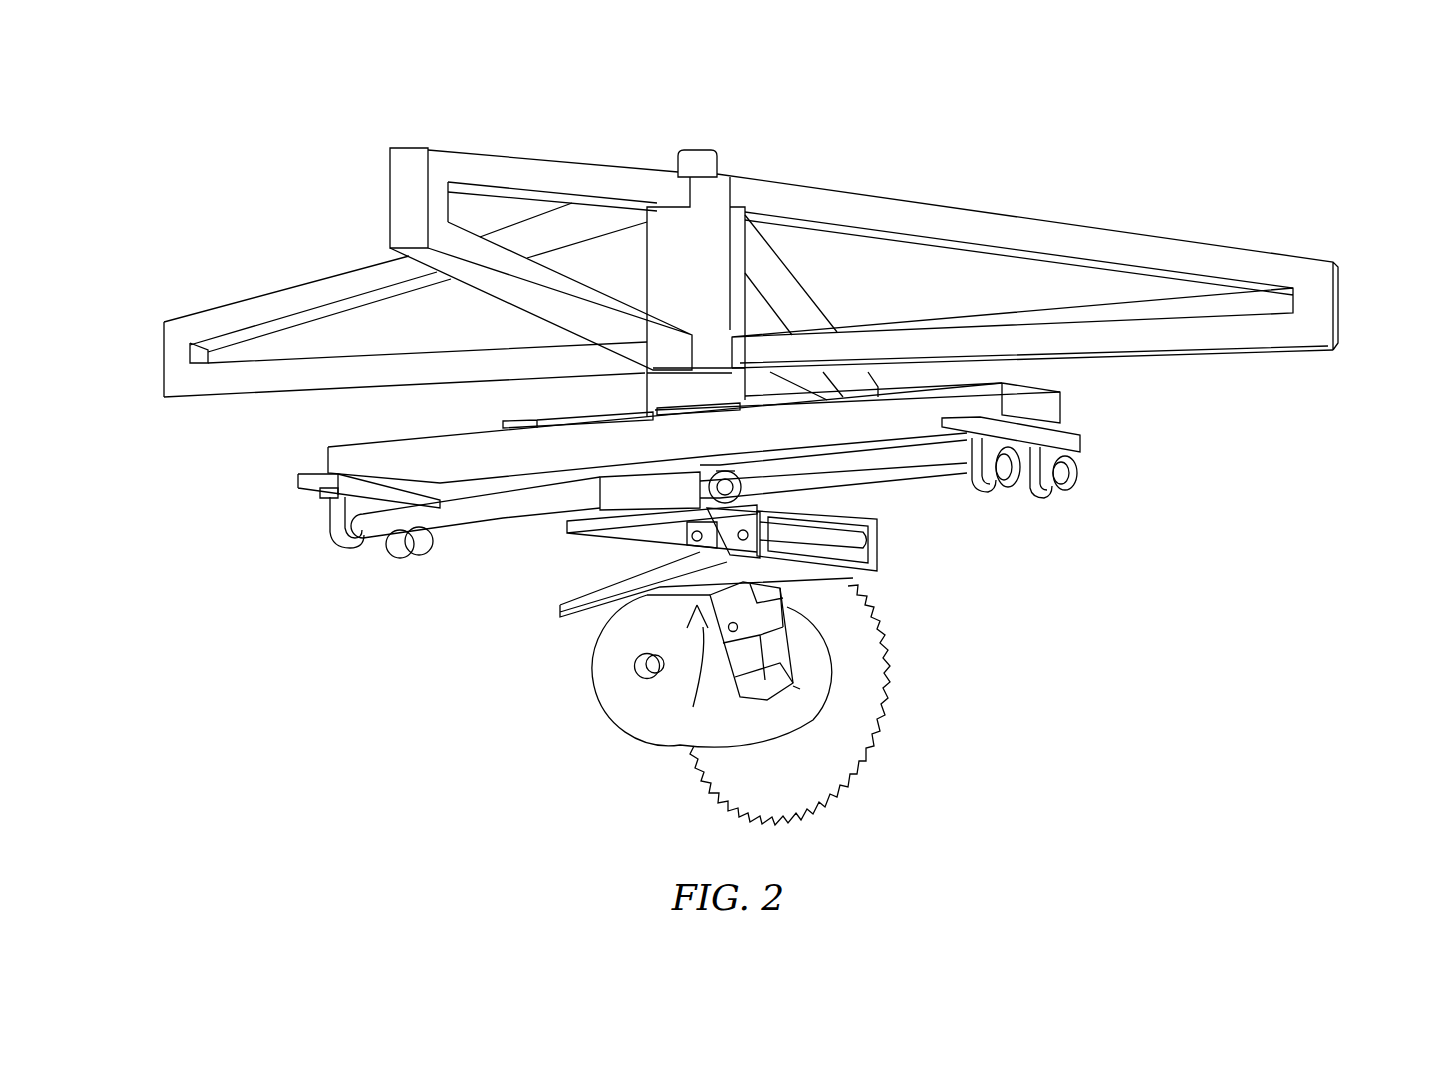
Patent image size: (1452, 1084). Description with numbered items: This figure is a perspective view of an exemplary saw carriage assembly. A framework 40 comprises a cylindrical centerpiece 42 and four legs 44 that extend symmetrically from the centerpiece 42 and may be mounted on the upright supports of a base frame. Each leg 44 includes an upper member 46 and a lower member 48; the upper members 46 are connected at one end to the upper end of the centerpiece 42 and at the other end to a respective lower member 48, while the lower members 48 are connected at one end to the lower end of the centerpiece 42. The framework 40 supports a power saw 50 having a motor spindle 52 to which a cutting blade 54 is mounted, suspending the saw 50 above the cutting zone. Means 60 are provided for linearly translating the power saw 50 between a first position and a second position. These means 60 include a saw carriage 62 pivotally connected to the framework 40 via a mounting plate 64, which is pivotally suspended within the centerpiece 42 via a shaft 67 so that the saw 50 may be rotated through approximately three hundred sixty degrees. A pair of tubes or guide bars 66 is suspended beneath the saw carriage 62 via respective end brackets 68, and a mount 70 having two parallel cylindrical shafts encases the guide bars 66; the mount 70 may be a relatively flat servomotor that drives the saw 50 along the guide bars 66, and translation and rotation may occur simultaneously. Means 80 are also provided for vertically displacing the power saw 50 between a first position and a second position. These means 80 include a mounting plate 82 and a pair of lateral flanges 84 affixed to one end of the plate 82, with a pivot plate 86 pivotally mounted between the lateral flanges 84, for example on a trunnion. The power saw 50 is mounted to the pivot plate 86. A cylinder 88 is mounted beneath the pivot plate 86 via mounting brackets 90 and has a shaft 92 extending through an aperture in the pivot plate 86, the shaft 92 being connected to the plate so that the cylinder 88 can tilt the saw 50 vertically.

The framework 40 is at (832, 178).
The cylindrical centerpiece 42 is at (700, 268).
The legs 44 is at (753, 276).
The upper member 46 is at (572, 160).
The lower member 48 is at (248, 393).
The power saw 50 is at (628, 710).
The motor spindle 52 is at (637, 670).
The cutting blade 54 is at (813, 782).
The means for linearly translating power saw 60 is at (730, 529).
The saw carriage 62 is at (1027, 408).
The mounting plate 64 is at (553, 413).
The guide bars 66 is at (908, 488).
The shaft 67 is at (700, 150).
The end brackets 68 is at (1050, 500).
The mount 70 is at (623, 495).
The means for vertically displacing power saw 80 is at (697, 607).
The mounting plate 82 is at (567, 527).
The lateral flanges 84 is at (860, 548).
The pivot plate 86 is at (598, 626).
The cylinder 88 is at (813, 712).
The mounting brackets 90 is at (797, 688).
The shaft 92 is at (690, 543).